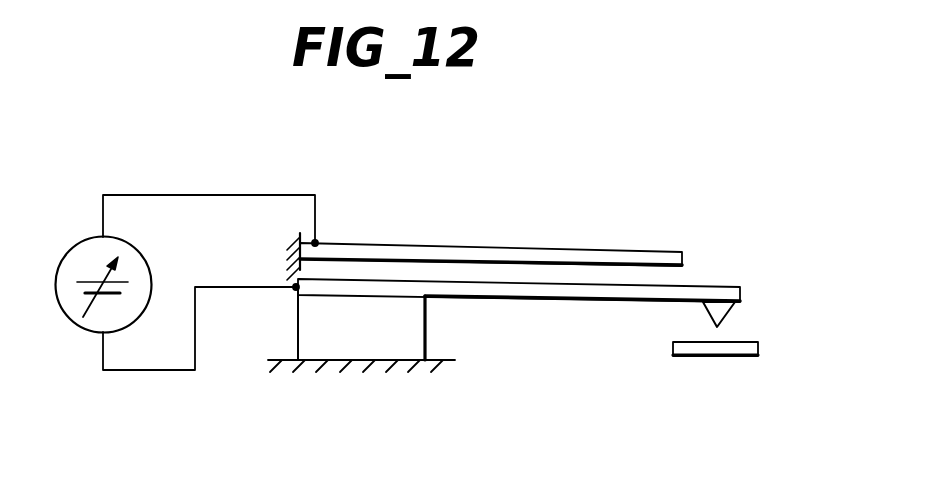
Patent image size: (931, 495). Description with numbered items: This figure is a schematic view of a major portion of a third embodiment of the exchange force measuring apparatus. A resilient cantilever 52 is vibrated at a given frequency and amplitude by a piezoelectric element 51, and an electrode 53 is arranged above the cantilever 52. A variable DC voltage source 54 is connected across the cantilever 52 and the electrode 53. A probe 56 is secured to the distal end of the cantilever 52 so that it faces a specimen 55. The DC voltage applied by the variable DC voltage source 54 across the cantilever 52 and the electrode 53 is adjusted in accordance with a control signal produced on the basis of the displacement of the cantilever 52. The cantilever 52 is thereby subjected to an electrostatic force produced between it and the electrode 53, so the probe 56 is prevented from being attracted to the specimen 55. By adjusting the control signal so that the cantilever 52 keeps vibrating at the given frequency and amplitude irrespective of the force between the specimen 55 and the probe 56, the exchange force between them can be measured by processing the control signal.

The piezoelectric element 51 is at (315, 323).
The resilient cantilever 52 is at (537, 302).
The electrode 53 is at (487, 247).
The variable DC voltage source 54 is at (150, 270).
The specimen 55 is at (730, 357).
The probe 56 is at (727, 317).